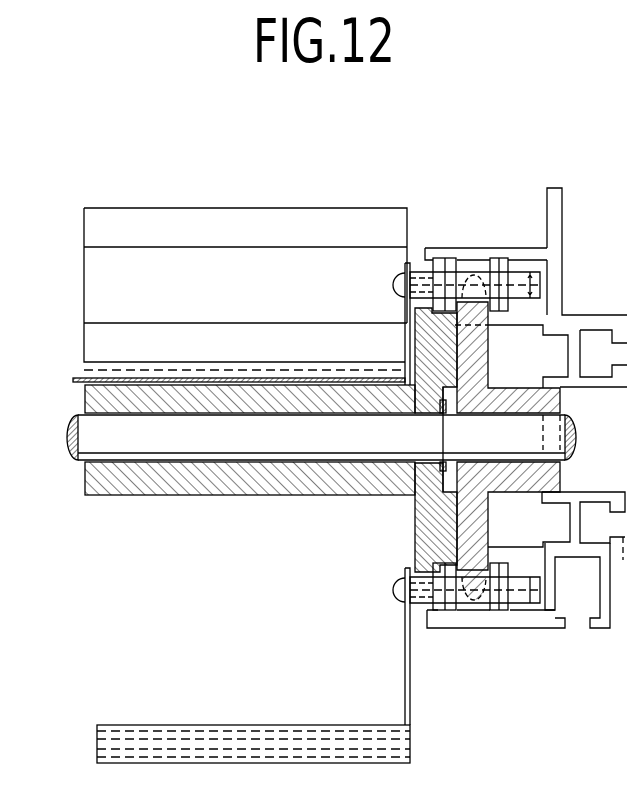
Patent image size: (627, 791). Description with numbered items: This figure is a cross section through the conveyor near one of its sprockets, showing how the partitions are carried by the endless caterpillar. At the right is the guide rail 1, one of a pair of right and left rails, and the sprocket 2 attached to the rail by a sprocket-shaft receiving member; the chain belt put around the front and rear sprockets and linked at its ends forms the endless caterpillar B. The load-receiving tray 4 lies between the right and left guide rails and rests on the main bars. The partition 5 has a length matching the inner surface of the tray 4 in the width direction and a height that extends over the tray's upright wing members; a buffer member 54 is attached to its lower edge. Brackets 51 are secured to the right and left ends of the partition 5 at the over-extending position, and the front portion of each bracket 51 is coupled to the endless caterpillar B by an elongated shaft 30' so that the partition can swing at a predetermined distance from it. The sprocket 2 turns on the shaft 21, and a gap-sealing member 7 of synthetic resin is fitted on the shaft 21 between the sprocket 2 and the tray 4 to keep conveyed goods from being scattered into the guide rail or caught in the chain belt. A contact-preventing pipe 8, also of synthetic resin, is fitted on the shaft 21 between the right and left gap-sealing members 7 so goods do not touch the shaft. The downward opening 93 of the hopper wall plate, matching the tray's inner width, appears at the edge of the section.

The guide rail 1 is at (562, 262).
The sprocket 2 is at (490, 352).
The load-receiving tray 4 is at (108, 381).
The partition 5 is at (127, 332).
The gap-sealing member 7 is at (415, 505).
The contact-preventing pipe 8 is at (195, 478).
The shaft 21 is at (237, 433).
The elongated shaft 30' is at (450, 424).
The endless caterpillar B is at (473, 280).
The bracket 51 is at (403, 265).
The buffer member 54 is at (110, 362).
The downward opening 93 is at (12, 272).